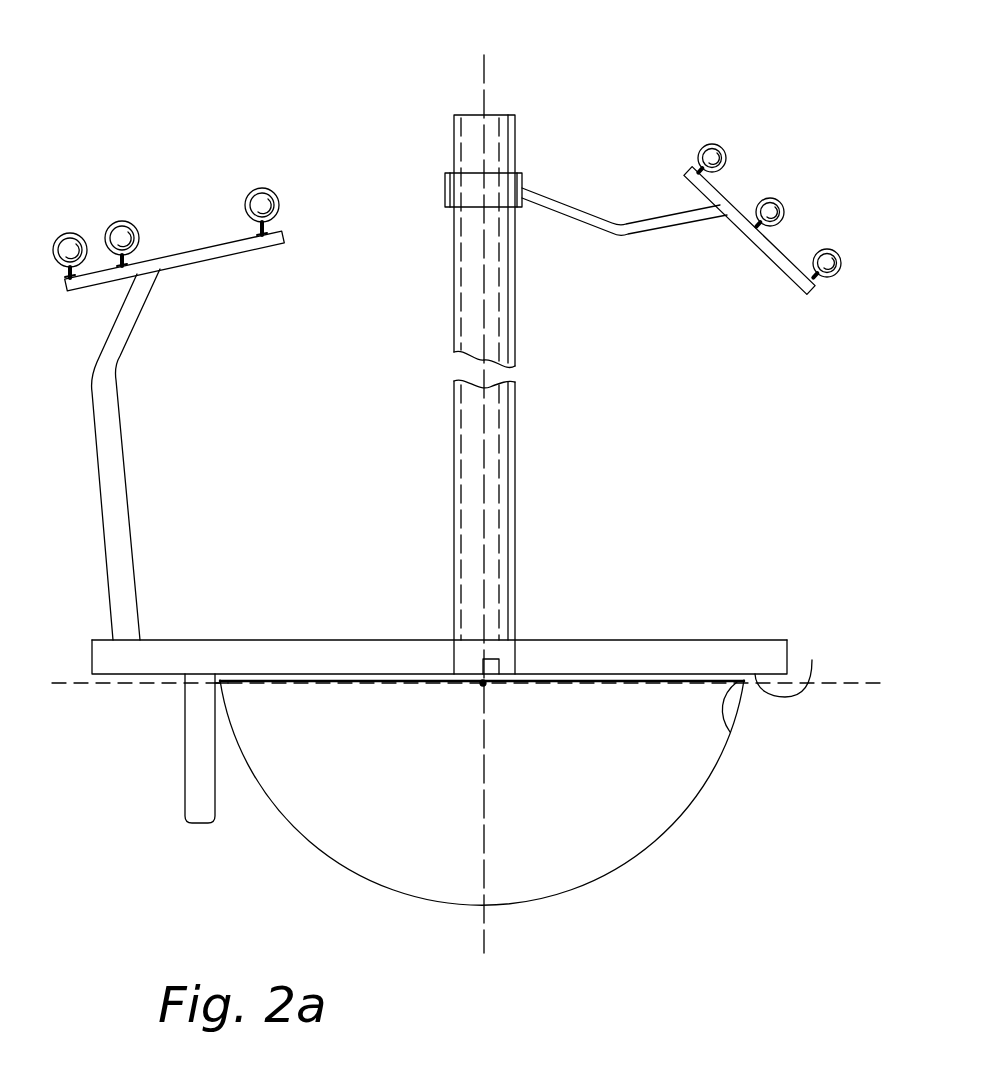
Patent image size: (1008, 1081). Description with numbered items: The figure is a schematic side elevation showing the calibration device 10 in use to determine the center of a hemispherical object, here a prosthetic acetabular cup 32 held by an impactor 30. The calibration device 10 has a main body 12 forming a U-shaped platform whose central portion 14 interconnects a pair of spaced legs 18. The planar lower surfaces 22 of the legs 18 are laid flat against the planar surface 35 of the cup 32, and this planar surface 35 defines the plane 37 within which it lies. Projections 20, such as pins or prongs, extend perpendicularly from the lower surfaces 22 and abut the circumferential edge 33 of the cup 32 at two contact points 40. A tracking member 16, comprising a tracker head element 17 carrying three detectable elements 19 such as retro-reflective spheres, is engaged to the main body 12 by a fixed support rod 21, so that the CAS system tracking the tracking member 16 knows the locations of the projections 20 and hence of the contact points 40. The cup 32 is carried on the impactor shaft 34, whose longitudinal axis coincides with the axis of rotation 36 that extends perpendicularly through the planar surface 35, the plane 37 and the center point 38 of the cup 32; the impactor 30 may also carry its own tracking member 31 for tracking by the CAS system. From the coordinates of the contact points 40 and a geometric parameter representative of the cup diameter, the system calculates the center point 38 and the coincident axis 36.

The calibration device 10 is at (197, 528).
The main body 12 is at (110, 690).
The central portion 14 is at (439, 607).
The tracking member 16 is at (168, 211).
The tracker head element 17 is at (187, 263).
The legs 18 is at (597, 650).
The detectable elements 19 is at (68, 250).
The projections 20 is at (195, 768).
The fixed support rod 21 is at (112, 440).
The lower surfaces 22 is at (812, 662).
The impactor 30 is at (533, 394).
The tracking member 31 is at (801, 165).
The hemispherical cup 32 is at (492, 733).
The circumferential edge 33 is at (730, 732).
The impactor shaft 34 is at (515, 452).
The planar surface 35 is at (242, 680).
The axis of rotation 36 is at (483, 937).
The plane 37 is at (853, 683).
The center point 38 is at (483, 683).
The contact points 40 is at (234, 692).